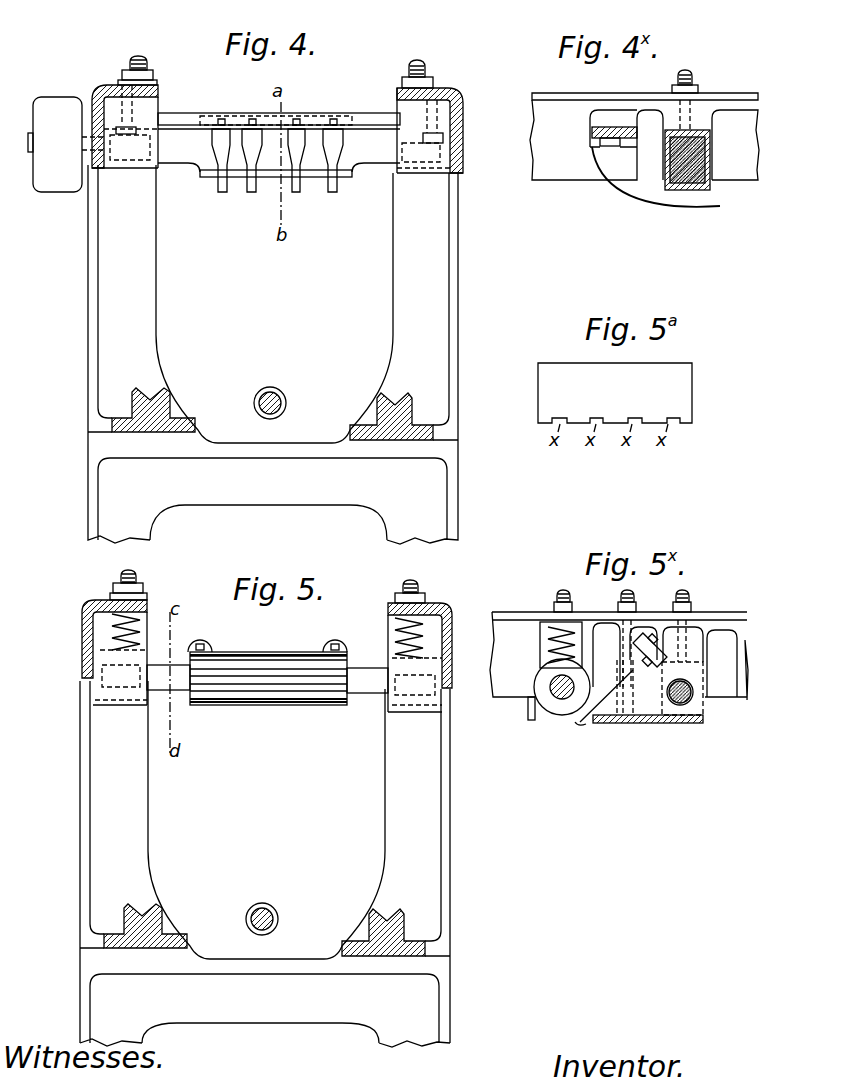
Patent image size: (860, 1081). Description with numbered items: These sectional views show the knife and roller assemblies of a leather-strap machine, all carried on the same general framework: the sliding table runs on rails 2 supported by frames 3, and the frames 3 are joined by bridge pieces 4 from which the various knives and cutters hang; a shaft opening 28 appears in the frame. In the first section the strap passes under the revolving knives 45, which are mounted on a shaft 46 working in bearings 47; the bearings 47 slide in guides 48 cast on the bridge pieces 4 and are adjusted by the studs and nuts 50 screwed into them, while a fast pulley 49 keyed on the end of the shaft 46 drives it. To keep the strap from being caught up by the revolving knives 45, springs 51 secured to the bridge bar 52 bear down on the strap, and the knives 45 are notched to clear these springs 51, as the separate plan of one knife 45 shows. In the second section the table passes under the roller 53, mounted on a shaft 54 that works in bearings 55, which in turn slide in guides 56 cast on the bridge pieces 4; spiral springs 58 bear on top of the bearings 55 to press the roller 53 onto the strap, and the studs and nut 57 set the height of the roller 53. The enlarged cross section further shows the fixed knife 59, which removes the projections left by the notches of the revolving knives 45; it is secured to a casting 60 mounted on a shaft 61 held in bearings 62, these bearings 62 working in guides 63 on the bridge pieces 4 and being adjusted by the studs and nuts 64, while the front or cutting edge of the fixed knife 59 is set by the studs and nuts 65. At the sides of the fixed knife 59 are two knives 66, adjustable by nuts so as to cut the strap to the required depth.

In FIG. 4, the rails 2 is at (132, 398).
In FIG. 5, the rails 2 is at (261, 930).
In FIG. 4, the frames 3 is at (273, 501).
In FIG. 5, the frames 3 is at (265, 1010).
In FIG. 4, the bridge pieces 4 is at (273, 346).
In FIG. 5, the bridge pieces 4 is at (265, 862).
In FIG. 5X, the bridge pieces 4 is at (530, 612).
In FIG. 4, the shaft bore 28 is at (286, 403).
In FIG. 5, the shaft bore 28 is at (277, 919).
In FIG. 4, the revolving knives 45 is at (312, 113).
In FIG. 4X, the revolving knives 45 is at (712, 134).
In FIG. 5A, the revolving knives 45 is at (615, 393).
In FIG. 4, the shaft 46 is at (279, 150).
In FIG. 4X, the shaft 46 is at (705, 165).
In FIG. 4, the bearings 47 is at (150, 170).
In FIG. 4, the guides 48 is at (120, 170).
In FIG. 4, the fast pulley 49 is at (55, 98).
In FIG. 4, the studs and nuts 50 is at (149, 77).
In FIG. 4X, the studs and nuts 50 is at (699, 89).
In FIG. 4, the springs 51 is at (222, 170).
In FIG. 4X, the springs 51 is at (644, 186).
In FIG. 4, the bridge bar 52 is at (181, 113).
In FIG. 5, the roller 53 is at (272, 706).
In FIG. 5X, the roller 53 is at (560, 716).
In FIG. 5, the shaft 54 is at (368, 694).
In FIG. 5X, the shaft 54 is at (551, 690).
In FIG. 5, the bearings 55 is at (97, 703).
In FIG. 5X, the bearings 55 is at (547, 672).
In FIG. 5, the guides 56 is at (125, 706).
In FIG. 5X, the guides 56 is at (528, 712).
In FIG. 5, the studs and nut 57 is at (136, 588).
In FIG. 5X, the studs and nut 57 is at (568, 600).
In FIG. 5, the spiral springs 58 is at (112, 627).
In FIG. 5X, the spiral springs 58 is at (547, 641).
In FIG. 5X, the fixed knife 59 is at (662, 723).
In FIG. 5, the casting 60 is at (212, 645).
In FIG. 5X, the casting 60 is at (669, 693).
In FIG. 5X, the shaft 61 is at (692, 699).
In FIG. 4X, the bearings 62 is at (606, 127).
In FIG. 5X, the bearings 62 is at (703, 685).
In FIG. 5X, the guides 63 is at (645, 628).
In FIG. 5X, the studs and nuts 64 is at (691, 603).
In FIG. 5X, the studs and nuts 65 is at (622, 601).
In FIG. 5X, the knives 66 is at (590, 724).